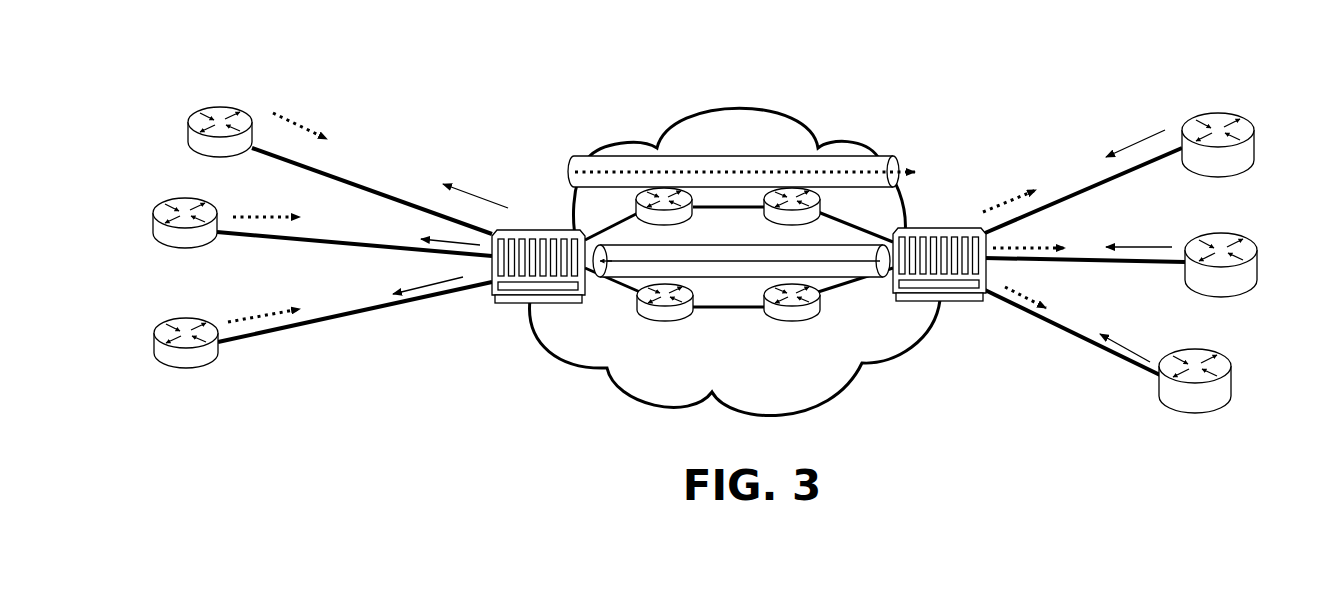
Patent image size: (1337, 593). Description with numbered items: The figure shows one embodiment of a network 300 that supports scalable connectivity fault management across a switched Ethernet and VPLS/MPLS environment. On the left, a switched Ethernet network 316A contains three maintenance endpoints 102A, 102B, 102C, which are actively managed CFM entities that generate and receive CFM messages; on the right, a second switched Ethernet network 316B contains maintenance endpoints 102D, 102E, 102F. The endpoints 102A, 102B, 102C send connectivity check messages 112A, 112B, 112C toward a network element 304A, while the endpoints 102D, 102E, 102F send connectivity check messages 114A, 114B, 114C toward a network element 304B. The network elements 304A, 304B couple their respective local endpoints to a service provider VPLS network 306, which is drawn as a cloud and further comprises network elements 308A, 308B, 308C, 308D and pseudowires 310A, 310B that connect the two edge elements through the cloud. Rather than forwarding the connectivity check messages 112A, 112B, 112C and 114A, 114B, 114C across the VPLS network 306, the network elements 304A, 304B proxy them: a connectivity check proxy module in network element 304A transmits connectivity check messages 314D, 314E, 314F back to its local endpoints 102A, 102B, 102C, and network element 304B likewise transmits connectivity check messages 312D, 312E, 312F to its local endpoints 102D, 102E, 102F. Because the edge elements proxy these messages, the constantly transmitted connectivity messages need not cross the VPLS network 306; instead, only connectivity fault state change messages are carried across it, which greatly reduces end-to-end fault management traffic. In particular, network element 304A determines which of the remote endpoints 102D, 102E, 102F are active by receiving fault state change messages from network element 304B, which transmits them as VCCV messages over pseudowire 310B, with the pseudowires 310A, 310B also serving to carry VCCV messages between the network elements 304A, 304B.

The network 300 is at (520, 96).
The maintenance endpoint 102A is at (123, 146).
The maintenance endpoint 102B is at (99, 225).
The maintenance endpoint 102C is at (102, 344).
The maintenance endpoint 102D is at (1257, 128).
The maintenance endpoint 102E is at (1268, 258).
The maintenance endpoint 102F is at (1285, 408).
The connectivity check message 112A is at (267, 81).
The connectivity check message 112B is at (237, 180).
The connectivity check message 112C is at (220, 281).
The connectivity check message 114A is at (1138, 96).
The connectivity check message 114B is at (1147, 198).
The connectivity check message 114C is at (1160, 332).
The network element 304A is at (471, 365).
The network element 304B is at (952, 367).
The VPLS network 306 is at (772, 401).
The network element 308A is at (619, 243).
The network element 308B is at (792, 244).
The network element 308C is at (642, 351).
The network element 308D is at (777, 351).
The pseudowire 310A is at (707, 233).
The pseudowire 310B is at (709, 333).
The connectivity check message 312D is at (952, 165).
The connectivity check message 312E is at (1055, 231).
The connectivity check message 312F is at (1049, 293).
The connectivity check message 314D is at (410, 160).
The connectivity check message 314E is at (377, 231).
The connectivity check message 314F is at (342, 275).
The switched Ethernet network 316A is at (381, 433).
The switched Ethernet network 316B is at (1014, 443).